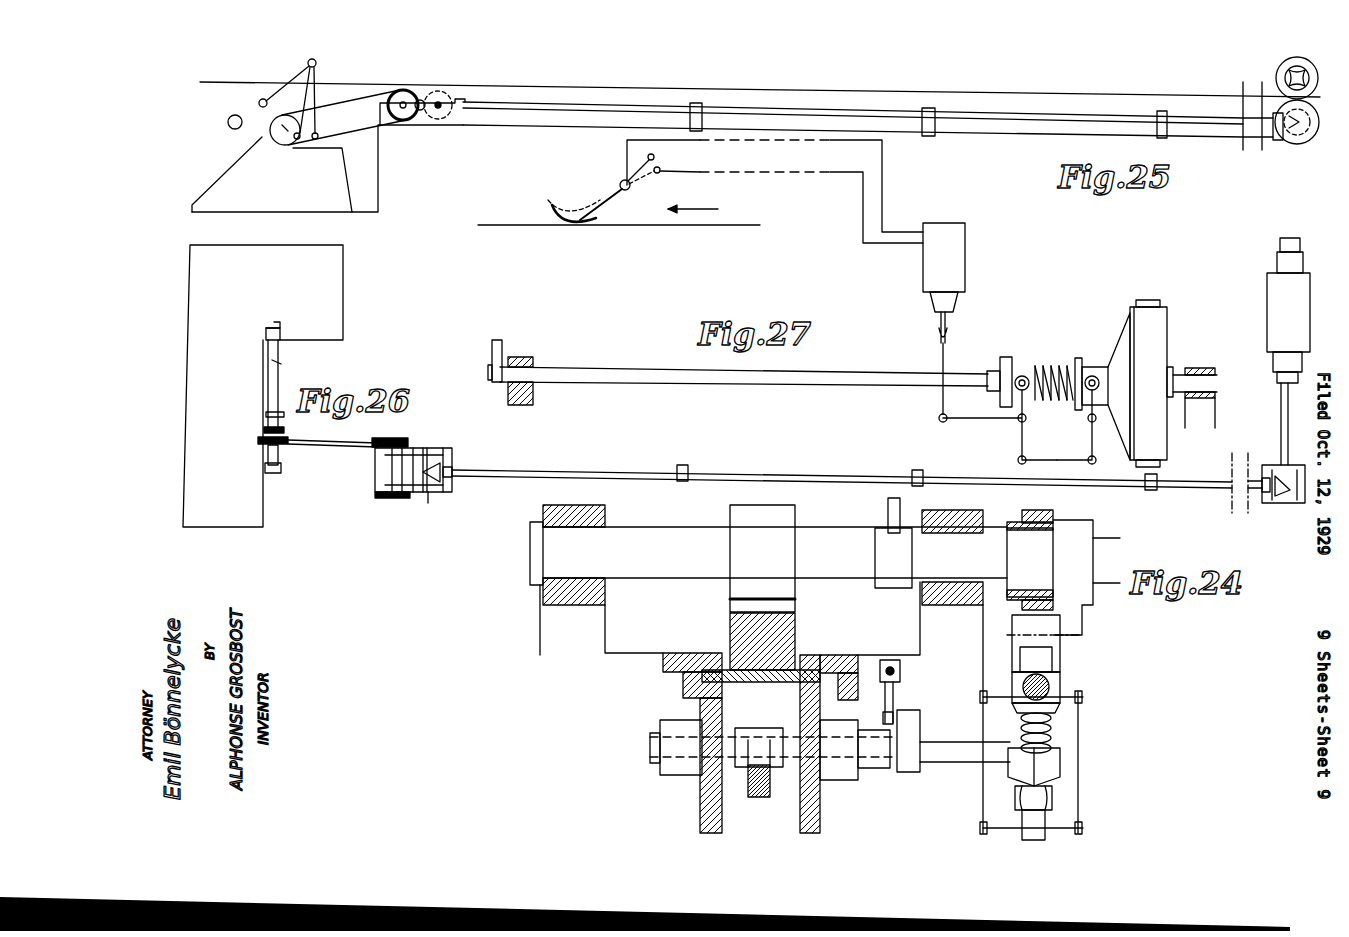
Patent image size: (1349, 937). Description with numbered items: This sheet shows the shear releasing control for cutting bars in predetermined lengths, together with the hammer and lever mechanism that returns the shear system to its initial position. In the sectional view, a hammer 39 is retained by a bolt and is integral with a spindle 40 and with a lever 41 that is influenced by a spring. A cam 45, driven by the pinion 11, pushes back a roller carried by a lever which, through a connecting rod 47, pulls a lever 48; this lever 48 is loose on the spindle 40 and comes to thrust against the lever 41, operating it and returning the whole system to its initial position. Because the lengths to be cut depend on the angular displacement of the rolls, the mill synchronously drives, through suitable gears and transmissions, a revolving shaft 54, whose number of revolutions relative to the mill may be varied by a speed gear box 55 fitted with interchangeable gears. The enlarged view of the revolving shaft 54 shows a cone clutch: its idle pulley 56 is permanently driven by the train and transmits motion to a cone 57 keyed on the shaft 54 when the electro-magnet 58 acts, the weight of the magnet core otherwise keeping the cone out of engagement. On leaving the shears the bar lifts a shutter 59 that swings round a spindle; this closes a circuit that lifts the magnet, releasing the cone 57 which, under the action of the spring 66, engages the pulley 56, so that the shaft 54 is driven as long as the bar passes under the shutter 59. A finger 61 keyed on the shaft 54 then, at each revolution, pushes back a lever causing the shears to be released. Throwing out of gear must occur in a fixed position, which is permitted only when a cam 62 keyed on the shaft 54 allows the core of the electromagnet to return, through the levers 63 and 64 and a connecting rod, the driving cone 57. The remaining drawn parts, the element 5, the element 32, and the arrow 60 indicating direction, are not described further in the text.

In FIG. 24, the shaft hub 5 is at (784, 641).
In FIG. 24, the pinion 11 is at (645, 546).
In FIG. 24, the bracket 32 is at (1082, 536).
In FIG. 24, the hammer 39 is at (754, 793).
In FIG. 24, the spindle 40 is at (960, 760).
In FIG. 24, the lever 41 is at (914, 724).
In FIG. 24, the cam 45 is at (888, 506).
In FIG. 24, the connecting rod 47 is at (903, 672).
In FIG. 24, the lever 48 is at (896, 702).
In FIG. 27, the revolving shaft 54 is at (586, 372).
In FIG. 26, the revolving shaft 54 is at (272, 362).
In FIG. 26, the speed gear box 55 is at (428, 452).
In FIG. 27, the idle pulley 56 is at (1157, 330).
In FIG. 27, the cone 57 is at (1122, 350).
In FIG. 27, the electro-magnet 58 is at (955, 270).
In FIG. 25, the shutter 59 is at (590, 205).
In FIG. 25, the direction of movement 60 is at (673, 210).
In FIG. 27, the finger 61 is at (496, 350).
In FIG. 26, the finger 61 is at (262, 332).
In FIG. 27, the cam 62 is at (1006, 367).
In FIG. 27, the lever 63 is at (1017, 432).
In FIG. 27, the lever 64 is at (1089, 430).
In FIG. 27, the spring 66 is at (1059, 367).